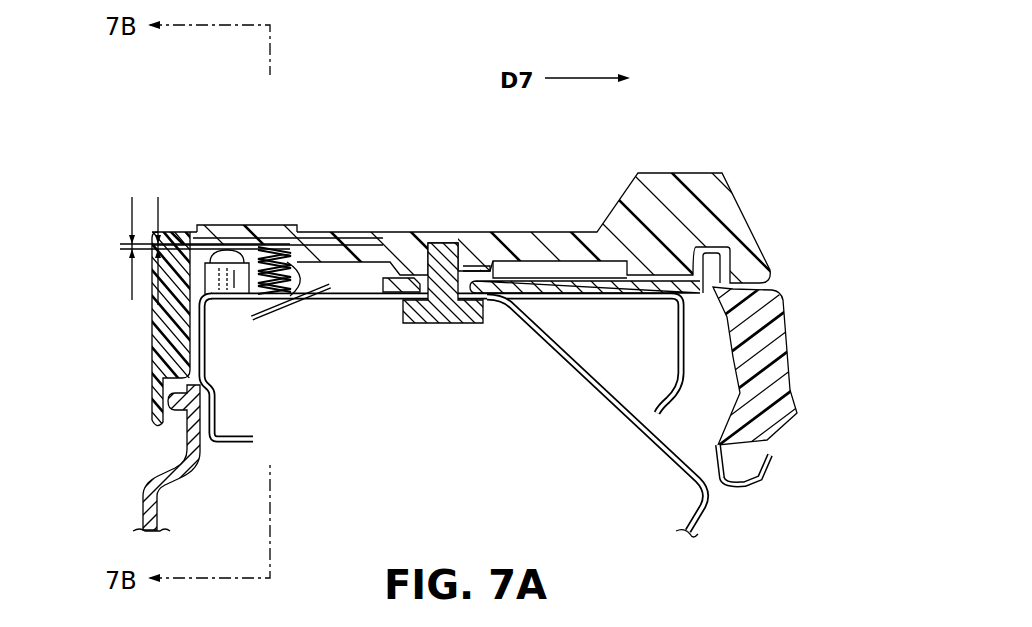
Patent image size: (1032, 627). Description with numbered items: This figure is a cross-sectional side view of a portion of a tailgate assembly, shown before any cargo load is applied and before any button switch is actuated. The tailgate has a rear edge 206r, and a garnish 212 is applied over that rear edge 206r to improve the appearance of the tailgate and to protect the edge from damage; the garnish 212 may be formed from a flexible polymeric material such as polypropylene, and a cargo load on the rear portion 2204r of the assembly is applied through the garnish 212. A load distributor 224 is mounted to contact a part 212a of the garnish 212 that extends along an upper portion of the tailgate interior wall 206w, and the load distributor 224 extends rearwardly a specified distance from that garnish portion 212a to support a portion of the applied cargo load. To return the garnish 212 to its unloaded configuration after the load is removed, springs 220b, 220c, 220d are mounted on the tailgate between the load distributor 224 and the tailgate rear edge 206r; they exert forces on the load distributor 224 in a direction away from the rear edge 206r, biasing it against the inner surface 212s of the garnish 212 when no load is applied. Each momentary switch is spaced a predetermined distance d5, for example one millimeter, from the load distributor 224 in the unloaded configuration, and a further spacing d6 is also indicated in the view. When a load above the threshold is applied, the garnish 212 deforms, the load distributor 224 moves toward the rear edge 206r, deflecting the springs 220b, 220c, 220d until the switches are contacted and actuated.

The garnish 212 is at (482, 232).
The inner surface of the garnish 212s is at (281, 225).
The part of the garnish 212a is at (162, 328).
The load distributor 224 is at (233, 227).
The predetermined distance d5 is at (159, 211).
The distance d6 is at (133, 283).
The tailgate rear edge 206r is at (362, 300).
The tailgate interior wall 206w is at (210, 347).
The spring 220b is at (302, 300).
The spring 220c is at (333, 341).
The spring 220d is at (327, 363).
The clip 2204r is at (790, 268).